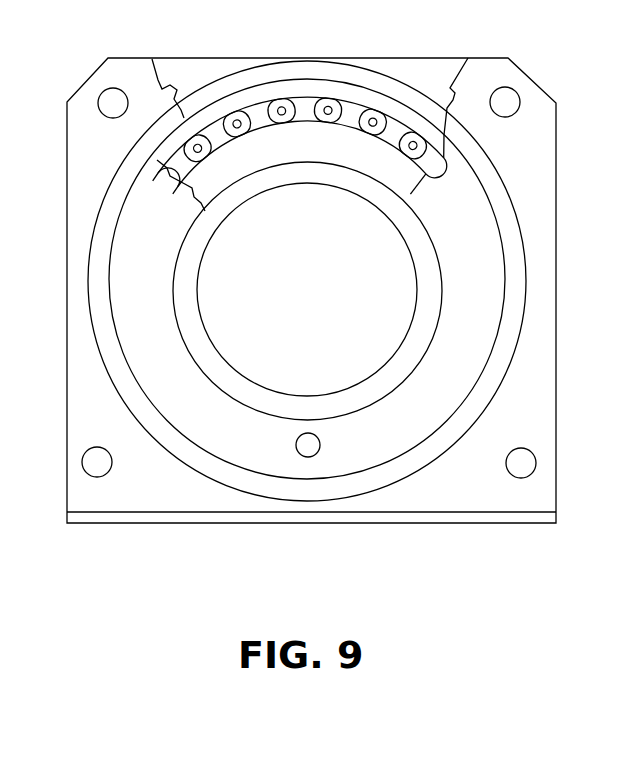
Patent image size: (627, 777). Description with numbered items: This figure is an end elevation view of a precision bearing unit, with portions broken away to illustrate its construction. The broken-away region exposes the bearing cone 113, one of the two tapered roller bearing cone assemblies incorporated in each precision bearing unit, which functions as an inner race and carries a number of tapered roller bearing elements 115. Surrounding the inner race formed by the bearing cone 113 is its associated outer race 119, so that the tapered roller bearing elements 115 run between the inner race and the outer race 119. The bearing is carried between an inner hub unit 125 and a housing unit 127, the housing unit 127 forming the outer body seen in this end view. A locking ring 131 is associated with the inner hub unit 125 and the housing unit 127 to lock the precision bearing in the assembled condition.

The bearing cone 113 is at (230, 158).
The tapered roller bearing elements 115 is at (277, 100).
The outer race 119 is at (340, 88).
The inner hub unit 125 is at (402, 58).
The housing unit 127 is at (500, 58).
The locking ring 131 is at (483, 320).